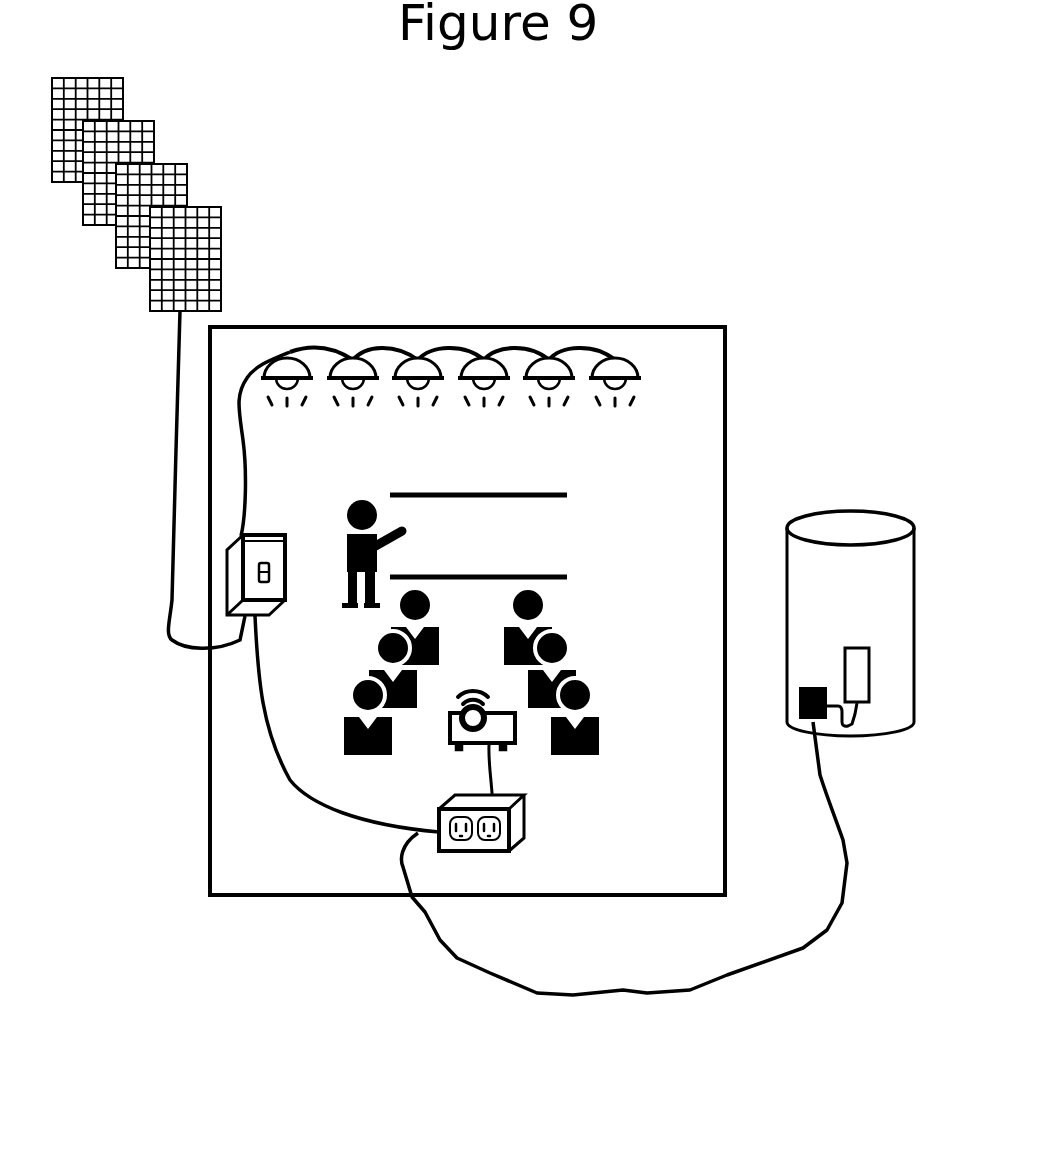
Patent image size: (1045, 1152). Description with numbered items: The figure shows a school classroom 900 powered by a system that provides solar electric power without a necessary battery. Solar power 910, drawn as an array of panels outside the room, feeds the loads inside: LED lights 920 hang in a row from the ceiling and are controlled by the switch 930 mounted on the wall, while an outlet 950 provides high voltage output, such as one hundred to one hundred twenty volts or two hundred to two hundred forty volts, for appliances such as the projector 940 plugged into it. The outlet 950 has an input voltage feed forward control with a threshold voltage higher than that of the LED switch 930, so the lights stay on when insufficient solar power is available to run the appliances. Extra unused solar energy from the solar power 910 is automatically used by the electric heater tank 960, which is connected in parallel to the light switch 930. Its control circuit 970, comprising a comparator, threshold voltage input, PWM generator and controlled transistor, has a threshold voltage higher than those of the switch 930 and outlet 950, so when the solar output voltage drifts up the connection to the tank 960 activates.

The classroom 900 is at (715, 327).
The solar power 910 is at (210, 182).
The LED lights 920 is at (613, 370).
The switch 930 is at (250, 568).
The projector 940 is at (510, 743).
The outlet power 950 is at (477, 855).
The electric heater tank 960 is at (850, 596).
The control circuit 970 is at (822, 723).